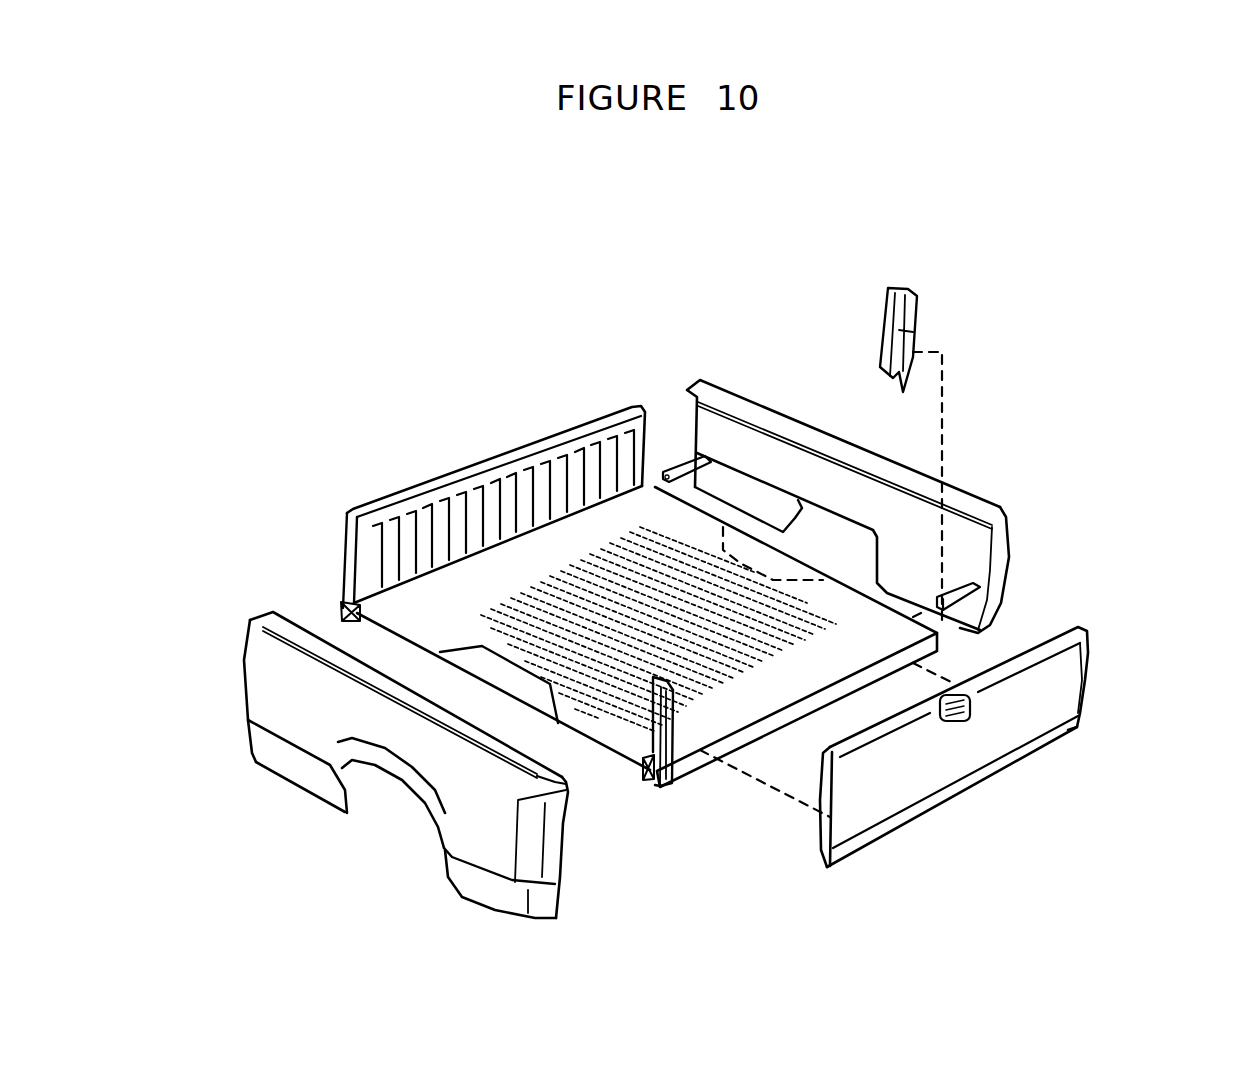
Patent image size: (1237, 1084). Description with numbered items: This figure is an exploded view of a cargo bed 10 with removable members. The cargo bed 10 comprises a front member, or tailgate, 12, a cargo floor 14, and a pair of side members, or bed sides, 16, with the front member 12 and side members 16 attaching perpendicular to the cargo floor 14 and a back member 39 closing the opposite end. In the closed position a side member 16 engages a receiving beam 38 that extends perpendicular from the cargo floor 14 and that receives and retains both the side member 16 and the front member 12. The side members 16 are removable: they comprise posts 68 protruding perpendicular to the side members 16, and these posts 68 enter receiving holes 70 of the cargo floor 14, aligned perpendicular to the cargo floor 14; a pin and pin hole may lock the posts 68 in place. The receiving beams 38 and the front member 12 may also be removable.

The cargo bed 10 is at (347, 386).
The front member 12 is at (960, 774).
The cargo floor 14 is at (737, 714).
The side member 16 is at (323, 720).
The receiving beam 38 is at (930, 288).
The back member 39 is at (452, 503).
The post 68 is at (671, 468).
The receiving hole 70 is at (343, 606).